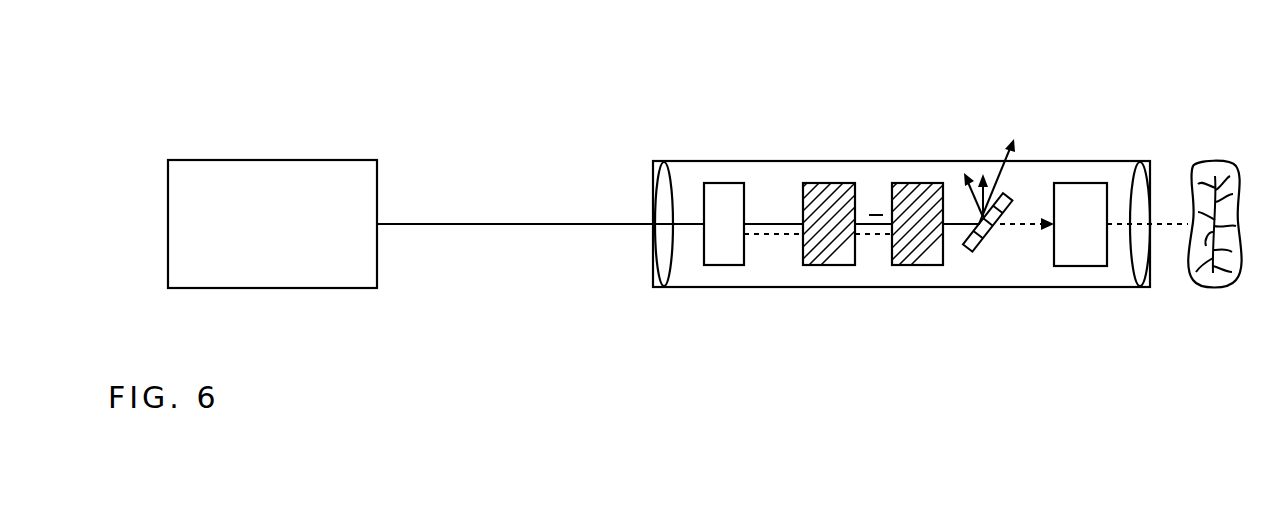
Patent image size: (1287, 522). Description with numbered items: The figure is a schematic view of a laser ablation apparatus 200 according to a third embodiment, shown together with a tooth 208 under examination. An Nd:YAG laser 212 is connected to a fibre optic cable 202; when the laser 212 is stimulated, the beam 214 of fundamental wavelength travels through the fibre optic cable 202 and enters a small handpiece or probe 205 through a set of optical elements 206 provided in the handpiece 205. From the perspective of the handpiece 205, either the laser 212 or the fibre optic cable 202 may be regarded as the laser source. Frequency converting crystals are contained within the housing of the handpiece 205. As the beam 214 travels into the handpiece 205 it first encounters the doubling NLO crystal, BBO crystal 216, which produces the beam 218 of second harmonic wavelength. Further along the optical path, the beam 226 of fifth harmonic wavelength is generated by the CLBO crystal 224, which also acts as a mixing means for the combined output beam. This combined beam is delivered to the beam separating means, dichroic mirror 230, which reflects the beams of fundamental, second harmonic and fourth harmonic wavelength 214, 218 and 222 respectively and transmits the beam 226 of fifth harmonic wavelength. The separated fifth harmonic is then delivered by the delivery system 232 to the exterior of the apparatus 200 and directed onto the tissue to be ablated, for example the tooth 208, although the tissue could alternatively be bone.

The laser ablation apparatus 200 is at (597, 100).
The fibre optic cable 202 is at (491, 221).
The handpiece or probe 205 is at (830, 295).
The set of optical elements 206 is at (673, 177).
The tooth 208 is at (1230, 288).
The Nd:YAG laser 212 is at (299, 288).
The beam of fundamental wavelength 214 is at (689, 218).
The BBO crystal 216 is at (717, 265).
The beam of second harmonic wavelength 218 is at (768, 235).
The beam of fourth harmonic wavelength 222 is at (873, 215).
The CLBO crystal 224 is at (917, 187).
The beam of fifth harmonic wavelength 226 is at (1043, 229).
The dichroic mirror 230 is at (986, 250).
The delivery system 232 is at (1080, 266).